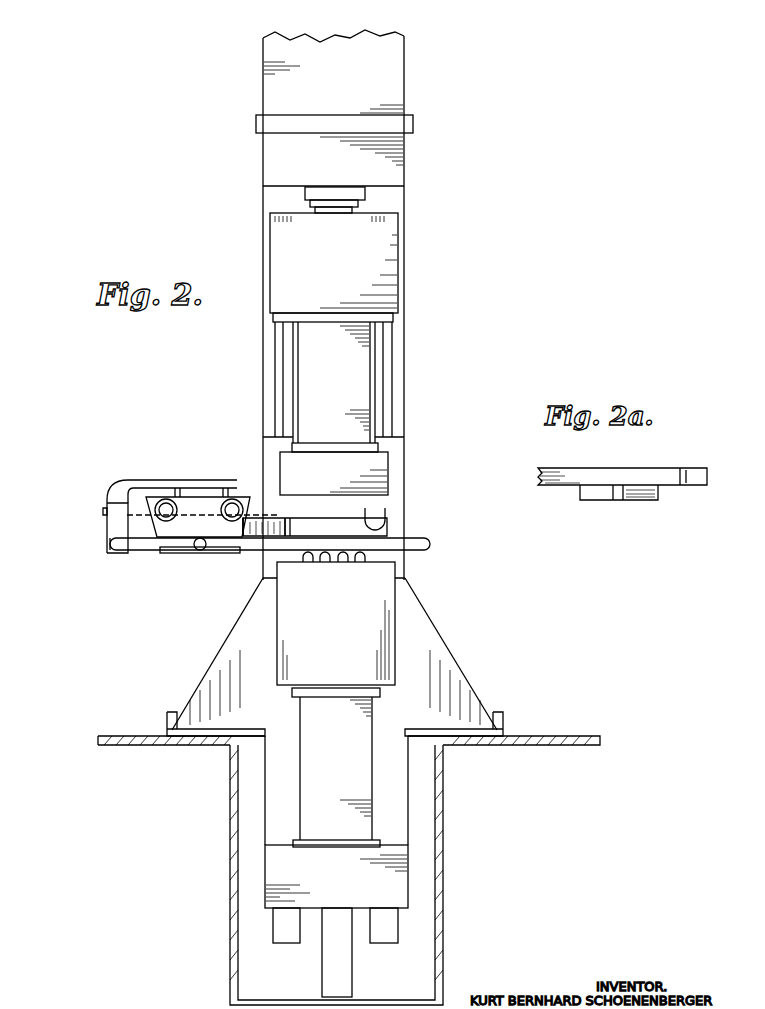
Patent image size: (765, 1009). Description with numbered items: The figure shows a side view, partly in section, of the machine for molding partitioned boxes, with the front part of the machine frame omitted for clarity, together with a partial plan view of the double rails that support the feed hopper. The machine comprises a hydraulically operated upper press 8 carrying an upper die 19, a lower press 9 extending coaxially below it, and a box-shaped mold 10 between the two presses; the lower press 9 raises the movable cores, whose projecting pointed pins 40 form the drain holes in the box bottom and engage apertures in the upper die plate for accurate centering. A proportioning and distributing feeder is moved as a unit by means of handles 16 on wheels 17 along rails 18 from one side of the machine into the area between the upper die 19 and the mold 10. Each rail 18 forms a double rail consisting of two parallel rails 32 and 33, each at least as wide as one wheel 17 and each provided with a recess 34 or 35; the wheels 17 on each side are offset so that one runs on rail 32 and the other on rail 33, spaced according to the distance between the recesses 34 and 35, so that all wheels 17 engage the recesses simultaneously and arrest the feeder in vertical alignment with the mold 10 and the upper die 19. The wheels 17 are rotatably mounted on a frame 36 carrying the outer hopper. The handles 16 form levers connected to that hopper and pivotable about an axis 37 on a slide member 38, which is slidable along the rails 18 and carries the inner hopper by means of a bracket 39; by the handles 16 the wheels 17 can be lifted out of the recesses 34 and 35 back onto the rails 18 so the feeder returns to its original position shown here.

In FIG. 2, the upper press 8 is at (385, 262).
In FIG. 2, the lower press 9 is at (397, 892).
In FIG. 2, the box-shaped mold 10 is at (385, 572).
In FIG. 2, the handles 16 is at (430, 545).
In FIG. 2, the wheels 17 is at (235, 500).
In FIG. 2, the rails 18 is at (265, 530).
In FIG. 2, the upper die 19 is at (375, 468).
In FIG. 2, the rail 32 is at (387, 528).
In FIG. 2a, the rail 32 is at (580, 478).
In FIG. 2, the rail 33 is at (275, 528).
In FIG. 2a, the rail 33 is at (650, 500).
In FIG. 2, the recess 34 is at (373, 518).
In FIG. 2a, the recess 34 is at (690, 487).
In FIG. 2, the recess 35 is at (315, 518).
In FIG. 2a, the recess 35 is at (618, 502).
In FIG. 2, the frame 36 is at (175, 555).
In FIG. 2, the axis 37 is at (110, 545).
In FIG. 2, the slide member 38 is at (112, 523).
In FIG. 2, the bracket 39 is at (118, 482).
In FIG. 2, the pointed pins 40 is at (325, 565).